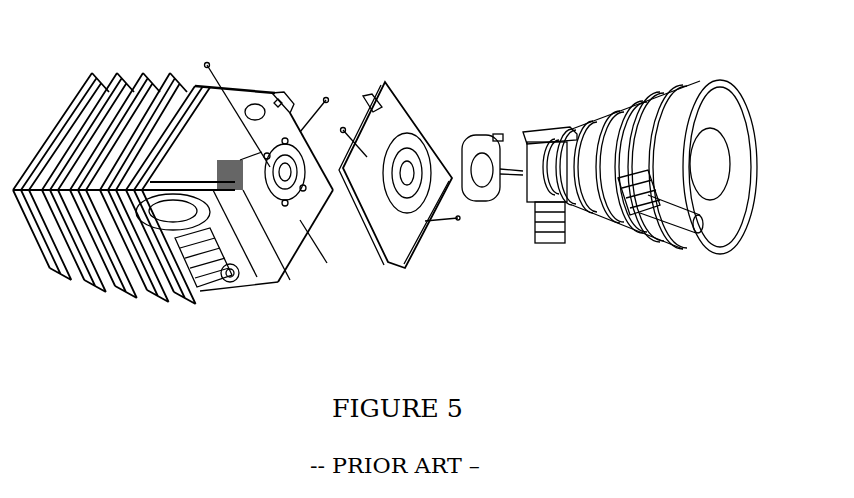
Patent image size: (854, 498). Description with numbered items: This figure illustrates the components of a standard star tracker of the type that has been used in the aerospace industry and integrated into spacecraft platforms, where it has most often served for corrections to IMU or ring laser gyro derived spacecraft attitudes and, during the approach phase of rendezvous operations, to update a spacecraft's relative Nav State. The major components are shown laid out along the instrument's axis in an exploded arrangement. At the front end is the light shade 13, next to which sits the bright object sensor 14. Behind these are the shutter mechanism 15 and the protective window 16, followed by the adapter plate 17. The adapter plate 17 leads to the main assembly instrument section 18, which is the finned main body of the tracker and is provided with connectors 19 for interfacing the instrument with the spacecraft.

The light shade 13 is at (627, 107).
The bright object sensor 14 is at (683, 230).
The shutter mechanism 15 is at (530, 235).
The protective window 16 is at (479, 125).
The adapter plate 17 is at (385, 83).
The main assembly instrument section 18 is at (150, 38).
The connectors 19 is at (217, 283).